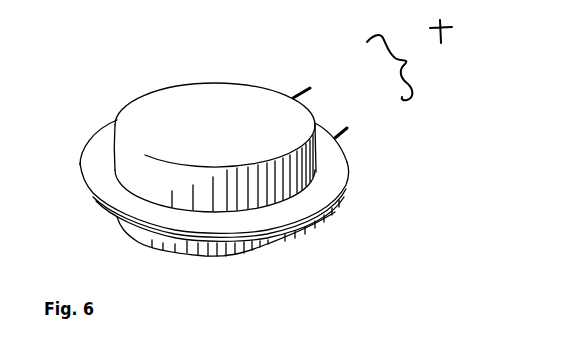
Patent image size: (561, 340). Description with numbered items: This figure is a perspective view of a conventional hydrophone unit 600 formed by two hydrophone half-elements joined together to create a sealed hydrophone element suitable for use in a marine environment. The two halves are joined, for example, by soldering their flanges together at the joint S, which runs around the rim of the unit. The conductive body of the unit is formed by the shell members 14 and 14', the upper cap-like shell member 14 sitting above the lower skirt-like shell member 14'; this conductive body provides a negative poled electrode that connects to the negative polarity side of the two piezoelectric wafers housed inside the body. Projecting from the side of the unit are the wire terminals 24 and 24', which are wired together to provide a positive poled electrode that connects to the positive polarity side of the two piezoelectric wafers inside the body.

The shell member 14 is at (215, 132).
The shell member 14' is at (211, 242).
The wire terminal 24 is at (322, 82).
The wire terminal 24' is at (365, 131).
The soldered flanges S is at (350, 182).
The hydrophone unit 600 is at (359, 246).